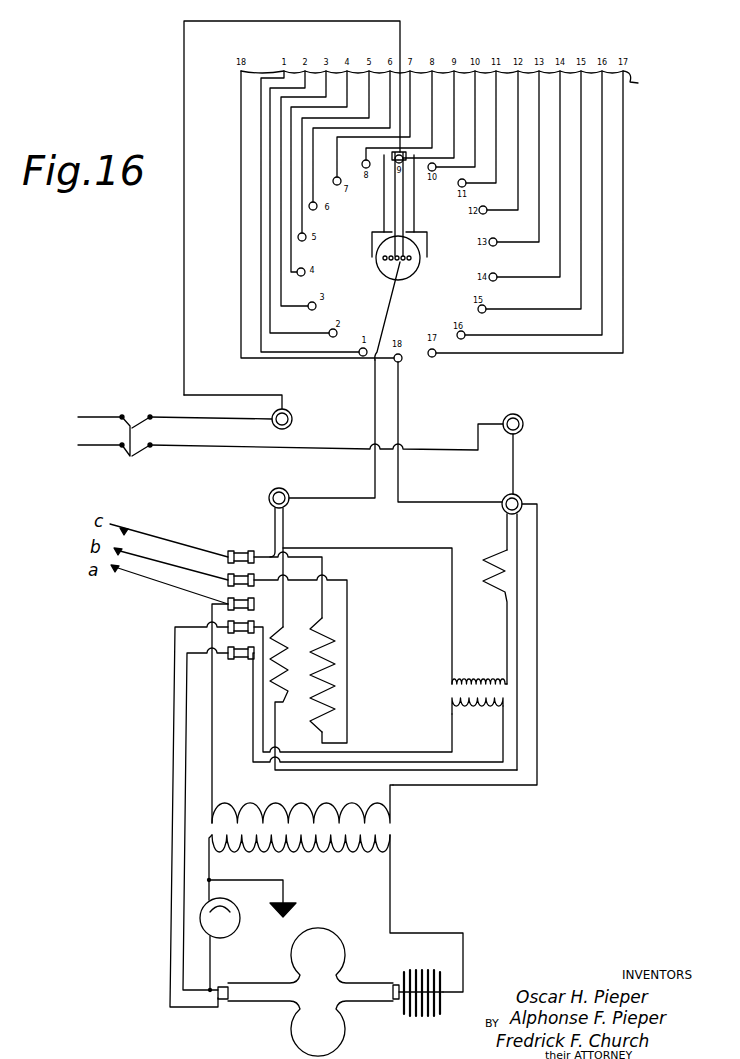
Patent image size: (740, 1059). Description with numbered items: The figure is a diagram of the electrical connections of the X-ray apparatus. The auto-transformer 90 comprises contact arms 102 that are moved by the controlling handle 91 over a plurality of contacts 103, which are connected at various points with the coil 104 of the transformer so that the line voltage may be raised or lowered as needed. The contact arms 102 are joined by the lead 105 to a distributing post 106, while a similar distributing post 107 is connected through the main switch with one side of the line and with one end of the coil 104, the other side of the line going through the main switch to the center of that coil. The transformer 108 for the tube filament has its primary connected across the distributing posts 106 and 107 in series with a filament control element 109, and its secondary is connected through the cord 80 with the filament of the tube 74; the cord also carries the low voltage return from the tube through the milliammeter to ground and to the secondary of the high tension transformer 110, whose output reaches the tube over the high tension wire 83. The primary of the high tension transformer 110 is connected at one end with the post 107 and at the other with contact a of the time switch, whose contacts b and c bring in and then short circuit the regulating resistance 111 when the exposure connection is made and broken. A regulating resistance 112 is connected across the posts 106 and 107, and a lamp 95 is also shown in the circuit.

The X-ray tube 74 is at (372, 1000).
The cord 80 is at (174, 757).
The high tension wire 83 is at (392, 914).
The auto-transformer 90 is at (626, 232).
The controlling handle 91 is at (378, 271).
The lamp 95 is at (236, 932).
The contact arms 102 is at (413, 207).
The contacts 103 is at (497, 247).
The coil 104 is at (451, 83).
The lead 105 is at (374, 424).
The distributing post 106 is at (269, 498).
The distributing post 107 is at (524, 499).
The transformer for the filament 108 is at (450, 690).
The filament control element 109 is at (493, 619).
The high tension transformer 110 is at (392, 837).
The regulating resistance 111 is at (341, 638).
The regulating resistance 112 is at (284, 626).